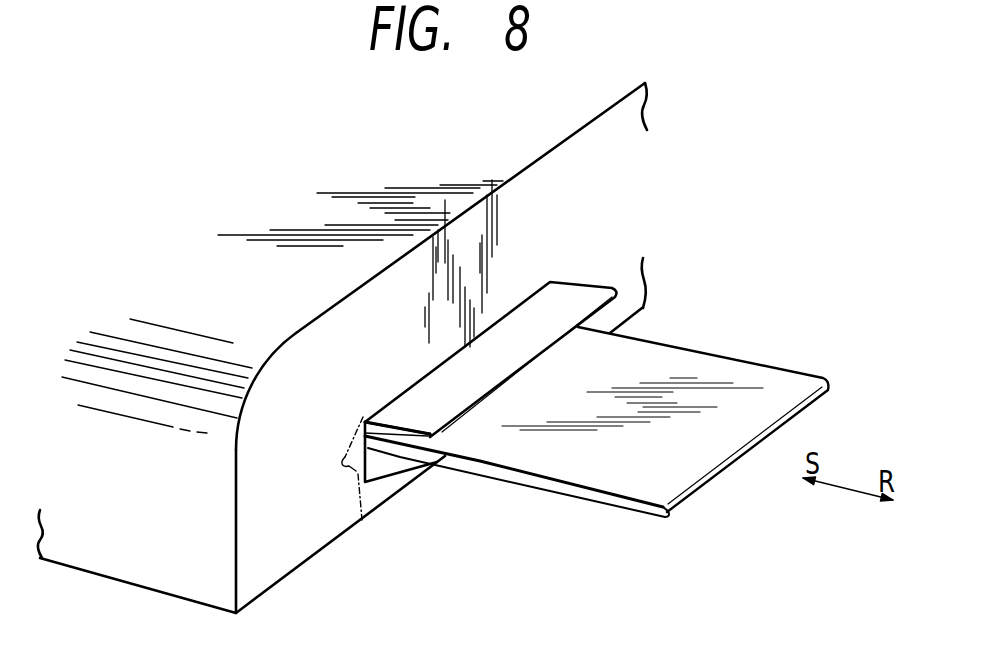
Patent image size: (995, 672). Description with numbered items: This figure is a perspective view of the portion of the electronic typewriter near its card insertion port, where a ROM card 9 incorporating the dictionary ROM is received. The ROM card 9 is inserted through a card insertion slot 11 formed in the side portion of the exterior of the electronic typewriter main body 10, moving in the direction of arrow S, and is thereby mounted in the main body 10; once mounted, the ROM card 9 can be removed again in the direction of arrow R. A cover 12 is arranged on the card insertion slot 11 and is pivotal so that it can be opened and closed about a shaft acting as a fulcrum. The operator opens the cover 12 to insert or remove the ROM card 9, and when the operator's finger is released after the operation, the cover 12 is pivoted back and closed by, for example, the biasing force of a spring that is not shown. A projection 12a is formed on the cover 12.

The ROM card 9 is at (673, 483).
The electronic typewriter main body 10 is at (275, 568).
The card insertion slot 11 is at (380, 460).
The cover 12 is at (427, 412).
The projection 12a is at (362, 520).